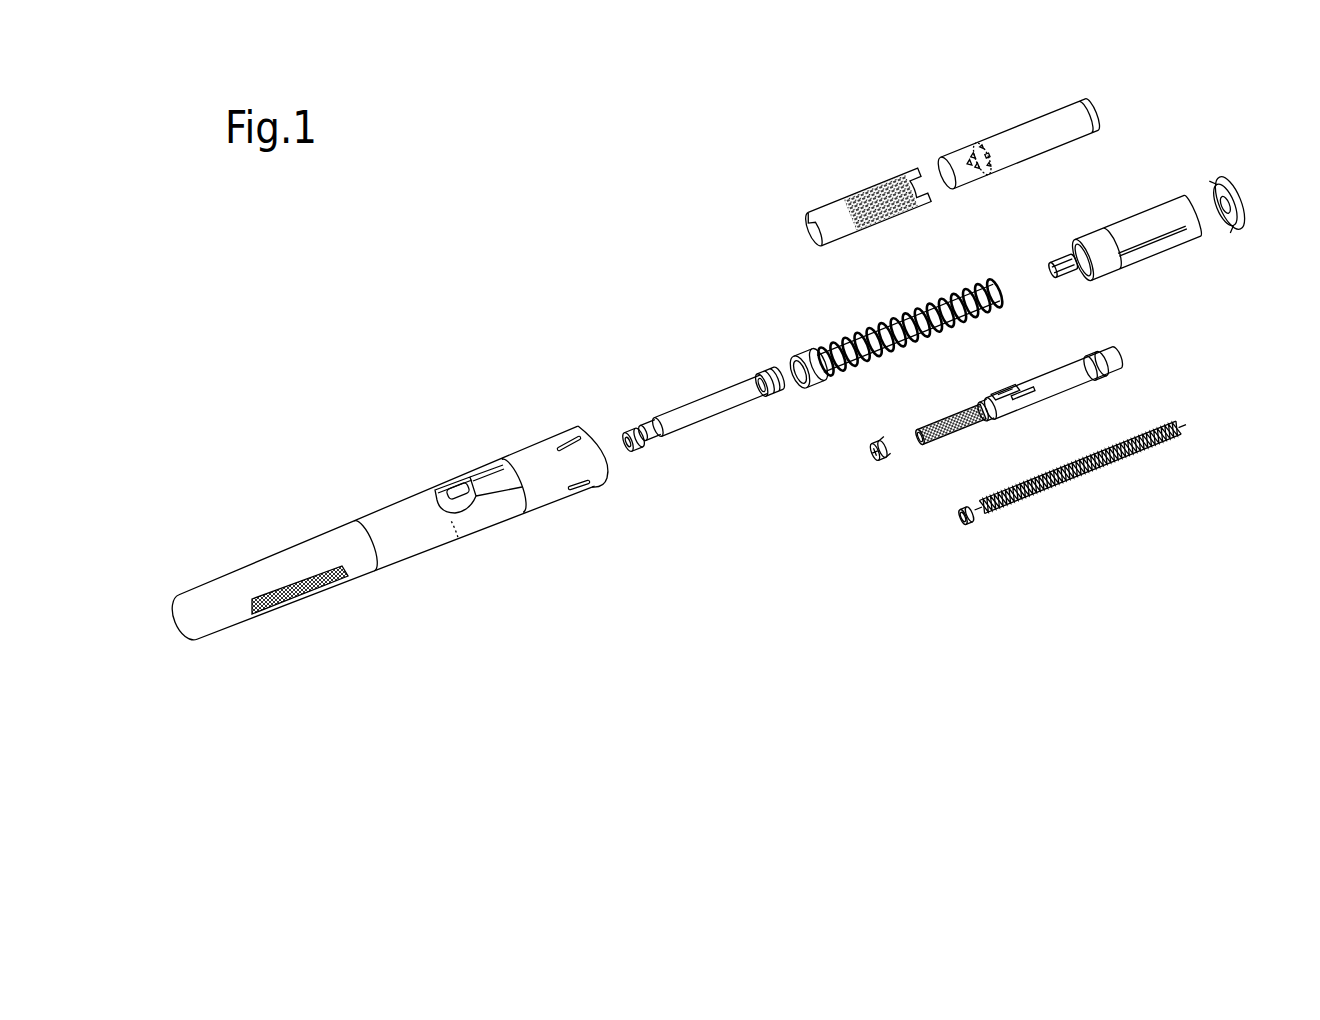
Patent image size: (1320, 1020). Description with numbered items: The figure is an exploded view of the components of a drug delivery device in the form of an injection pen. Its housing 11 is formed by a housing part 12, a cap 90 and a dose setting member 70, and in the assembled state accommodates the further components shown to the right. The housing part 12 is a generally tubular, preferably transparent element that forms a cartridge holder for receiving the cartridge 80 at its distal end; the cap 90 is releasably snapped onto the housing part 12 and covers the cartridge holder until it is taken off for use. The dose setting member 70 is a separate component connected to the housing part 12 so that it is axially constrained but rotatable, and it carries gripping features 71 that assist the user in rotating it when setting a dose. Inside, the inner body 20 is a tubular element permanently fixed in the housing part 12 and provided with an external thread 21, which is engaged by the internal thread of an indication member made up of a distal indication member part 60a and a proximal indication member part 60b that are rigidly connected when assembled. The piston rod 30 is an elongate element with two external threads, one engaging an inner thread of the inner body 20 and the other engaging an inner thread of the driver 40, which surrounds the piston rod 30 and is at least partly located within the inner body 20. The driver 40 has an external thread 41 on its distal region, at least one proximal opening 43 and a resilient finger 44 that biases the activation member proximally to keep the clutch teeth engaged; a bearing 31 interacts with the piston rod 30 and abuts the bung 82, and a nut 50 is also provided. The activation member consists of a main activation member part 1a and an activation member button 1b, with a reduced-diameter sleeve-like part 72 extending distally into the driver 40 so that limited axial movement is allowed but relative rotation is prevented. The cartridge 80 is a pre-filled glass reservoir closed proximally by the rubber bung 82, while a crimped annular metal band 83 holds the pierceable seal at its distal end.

The housing 11 is at (290, 322).
The housing part 12 is at (425, 488).
The dose setting member 70 is at (541, 438).
The gripping features 71 is at (575, 488).
The cap 90 is at (280, 545).
The cartridge 80 is at (697, 420).
The bung 82 is at (768, 382).
The crimped annular metal band 83 is at (632, 431).
The inner body 20 is at (800, 386).
The external thread 21 is at (982, 286).
The driver 40 is at (1082, 386).
The external thread 41 is at (955, 418).
The proximal opening 43 is at (1119, 365).
The resilient finger 44 is at (1097, 362).
The piston rod 30 is at (1078, 480).
The bearing 31 is at (968, 535).
The nut 50 is at (872, 468).
The distal indication member part 60a is at (853, 190).
The proximal indication member part 60b is at (1010, 125).
The main activation member part 1a is at (1160, 200).
The activation member button 1b is at (1232, 236).
The sleeve-like part 72 is at (1050, 262).